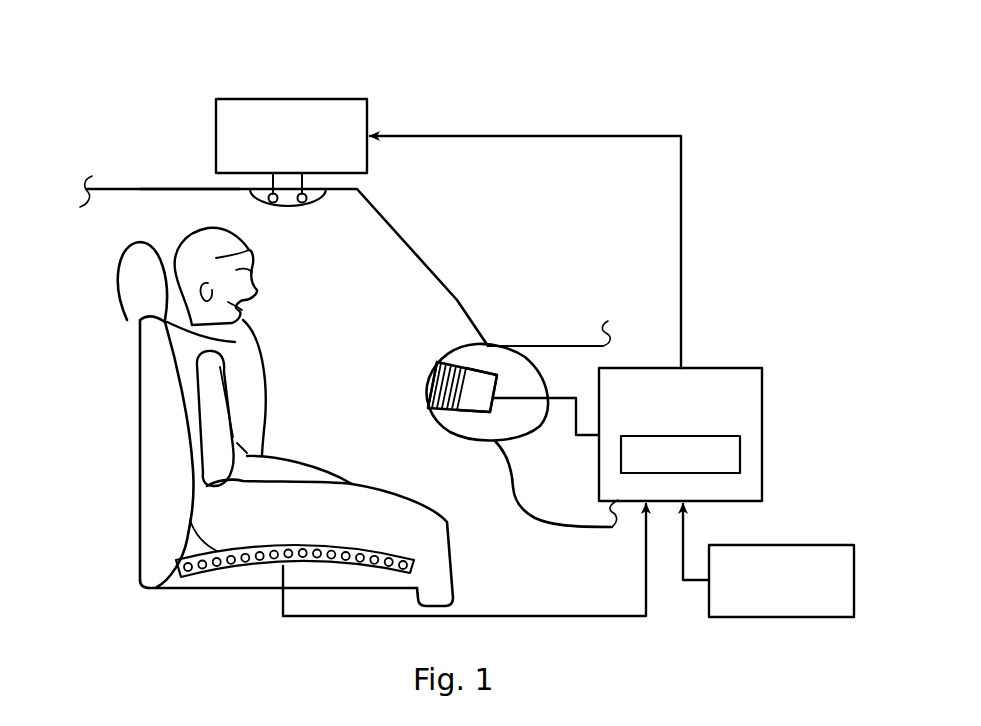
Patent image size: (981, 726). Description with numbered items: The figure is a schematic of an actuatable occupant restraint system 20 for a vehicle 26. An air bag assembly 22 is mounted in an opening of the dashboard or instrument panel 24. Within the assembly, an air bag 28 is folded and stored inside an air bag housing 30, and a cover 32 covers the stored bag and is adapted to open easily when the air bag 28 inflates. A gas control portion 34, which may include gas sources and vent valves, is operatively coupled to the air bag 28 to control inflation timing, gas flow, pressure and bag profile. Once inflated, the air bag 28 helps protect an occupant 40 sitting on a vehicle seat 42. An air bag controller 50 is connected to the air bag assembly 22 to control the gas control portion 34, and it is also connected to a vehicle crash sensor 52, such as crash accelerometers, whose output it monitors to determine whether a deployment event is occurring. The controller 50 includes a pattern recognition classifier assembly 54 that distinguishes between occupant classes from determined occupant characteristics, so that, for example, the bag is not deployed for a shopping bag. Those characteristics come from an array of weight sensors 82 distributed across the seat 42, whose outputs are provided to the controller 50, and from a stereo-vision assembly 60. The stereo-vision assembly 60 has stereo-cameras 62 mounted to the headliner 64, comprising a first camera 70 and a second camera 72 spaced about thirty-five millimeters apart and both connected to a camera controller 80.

The actuatable occupant restraint system 20 is at (588, 100).
The air bag assembly 22 is at (474, 360).
The instrument panel 24 is at (462, 345).
The vehicle 26 is at (165, 188).
The air bag 28 is at (434, 409).
The air bag housing 30 is at (464, 420).
The cover 32 is at (428, 376).
The gas control portion 34 is at (486, 412).
The occupant 40 is at (240, 345).
The vehicle seat 42 is at (138, 395).
The air bag controller 50 is at (731, 366).
The vehicle crash sensor 52 is at (788, 544).
The pattern recognition classifier assembly 54 is at (682, 474).
The stereo-vision assembly 60 is at (147, 86).
The stereo-cameras 62 is at (253, 201).
The headliner 64 is at (174, 191).
The first camera 70 is at (273, 206).
The second camera 72 is at (306, 205).
The camera controller 80 is at (352, 99).
The array of weight sensors 82 is at (213, 577).